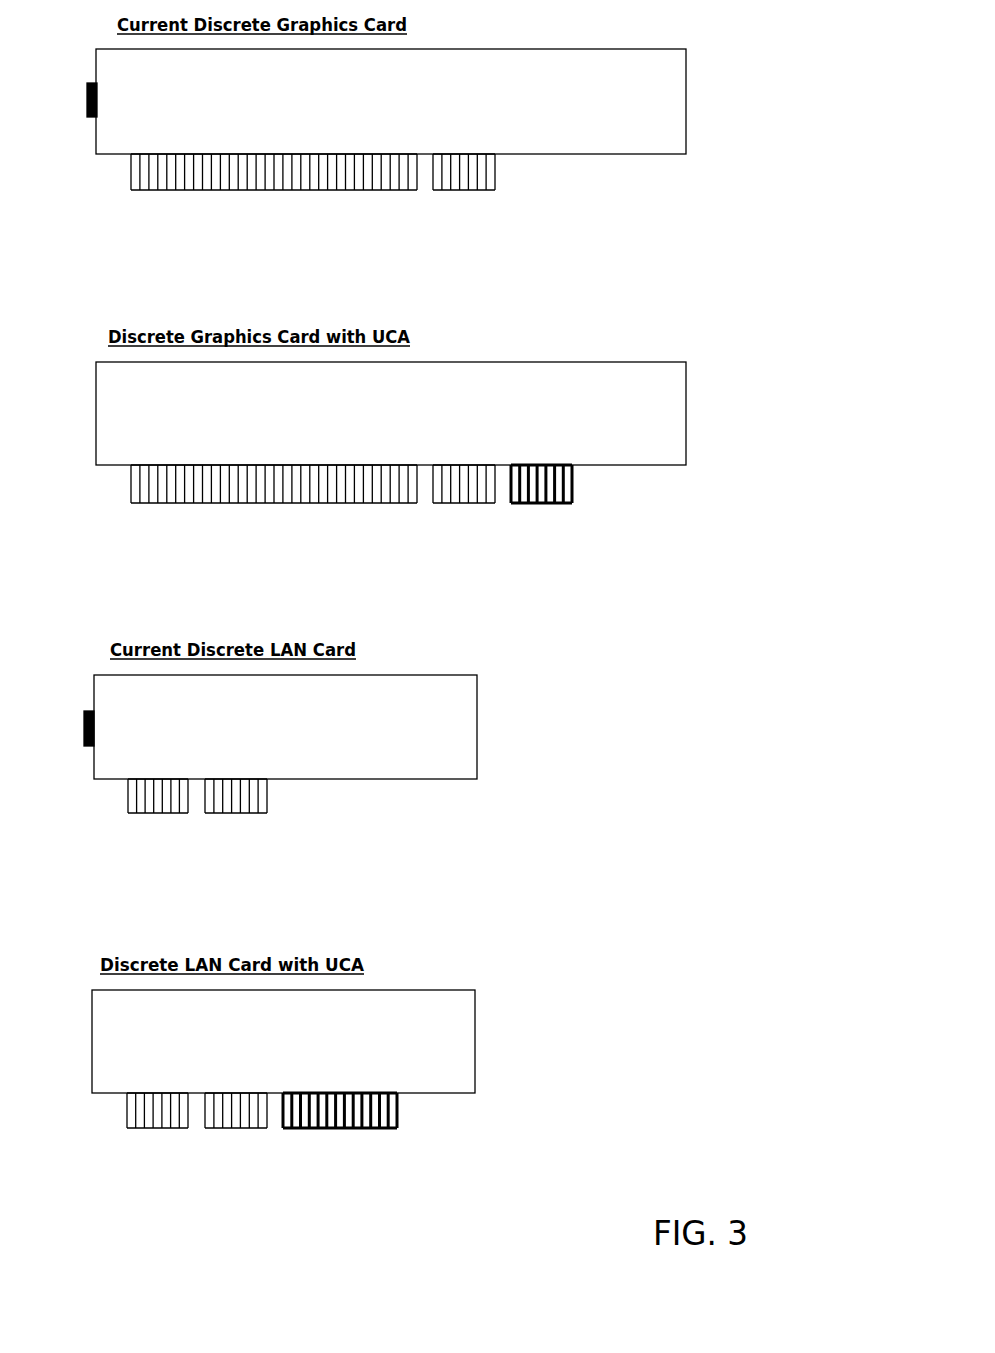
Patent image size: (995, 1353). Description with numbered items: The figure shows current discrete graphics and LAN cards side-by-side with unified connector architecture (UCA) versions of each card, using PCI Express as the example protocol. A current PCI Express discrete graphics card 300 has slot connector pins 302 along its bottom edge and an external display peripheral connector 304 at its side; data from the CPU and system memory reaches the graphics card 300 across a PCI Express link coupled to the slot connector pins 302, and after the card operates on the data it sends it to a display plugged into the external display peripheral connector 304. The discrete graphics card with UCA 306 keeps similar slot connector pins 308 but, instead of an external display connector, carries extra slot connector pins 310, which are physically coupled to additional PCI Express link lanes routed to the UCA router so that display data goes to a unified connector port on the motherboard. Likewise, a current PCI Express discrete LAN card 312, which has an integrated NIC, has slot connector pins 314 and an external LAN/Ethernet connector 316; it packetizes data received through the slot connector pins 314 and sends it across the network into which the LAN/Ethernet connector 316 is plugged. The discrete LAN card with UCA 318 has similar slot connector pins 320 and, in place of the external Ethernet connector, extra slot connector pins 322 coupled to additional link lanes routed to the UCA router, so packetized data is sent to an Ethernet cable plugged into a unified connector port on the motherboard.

The PCI Express discrete graphics card 300 is at (686, 105).
The slot connector pins 302 is at (496, 205).
The external display peripheral connector 304 is at (87, 104).
The discrete graphics card with UCA 306 is at (686, 418).
The slot connector pins 308 is at (495, 518).
The extra slot connector pins 310 is at (511, 518).
The PCI Express discrete LAN card 312 is at (477, 733).
The slot connector pins 314 is at (267, 832).
The external LAN/Ethernet connector 316 is at (84, 734).
The discrete LAN card with UCA 318 is at (475, 1045).
The slot connector pins 320 is at (127, 1147).
The extra slot connector pins 322 is at (397, 1147).